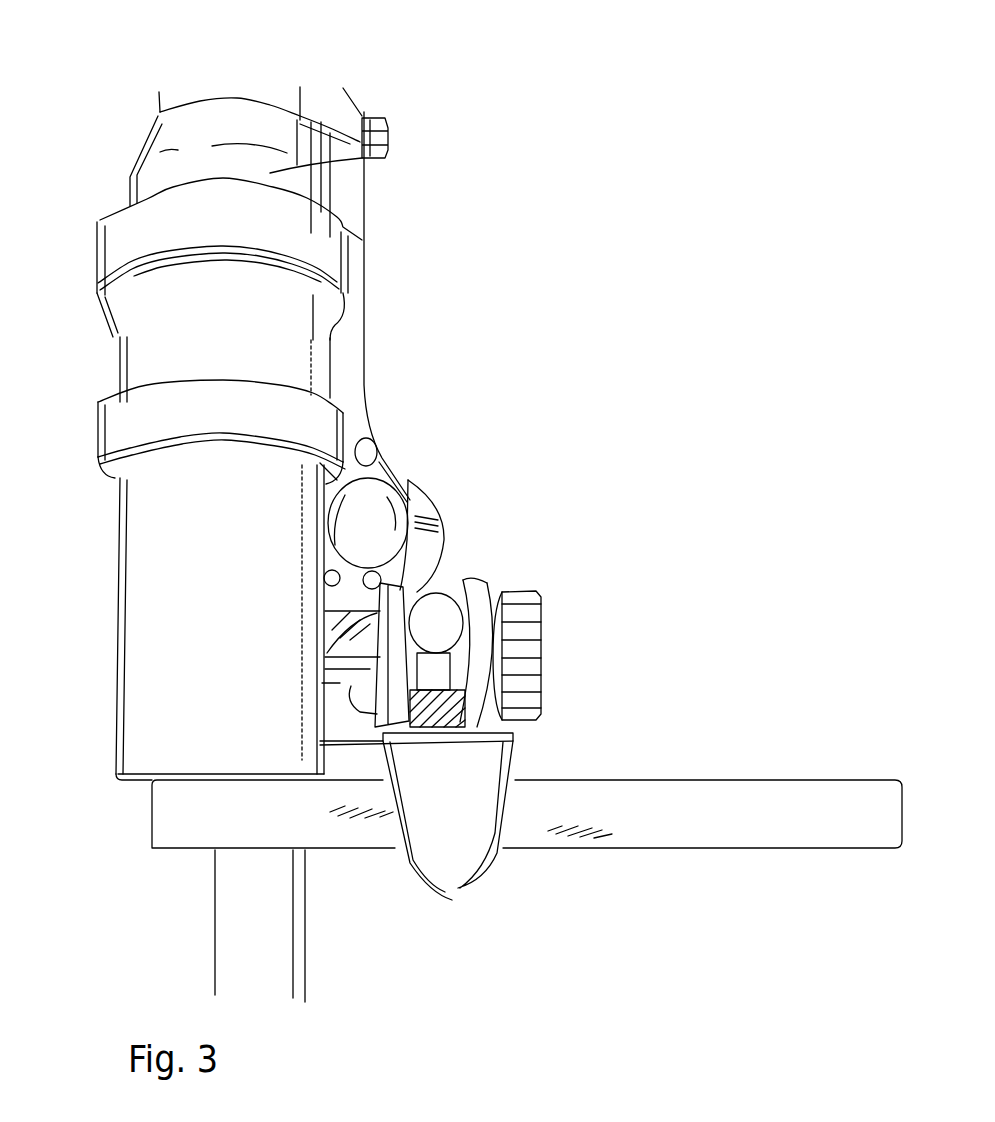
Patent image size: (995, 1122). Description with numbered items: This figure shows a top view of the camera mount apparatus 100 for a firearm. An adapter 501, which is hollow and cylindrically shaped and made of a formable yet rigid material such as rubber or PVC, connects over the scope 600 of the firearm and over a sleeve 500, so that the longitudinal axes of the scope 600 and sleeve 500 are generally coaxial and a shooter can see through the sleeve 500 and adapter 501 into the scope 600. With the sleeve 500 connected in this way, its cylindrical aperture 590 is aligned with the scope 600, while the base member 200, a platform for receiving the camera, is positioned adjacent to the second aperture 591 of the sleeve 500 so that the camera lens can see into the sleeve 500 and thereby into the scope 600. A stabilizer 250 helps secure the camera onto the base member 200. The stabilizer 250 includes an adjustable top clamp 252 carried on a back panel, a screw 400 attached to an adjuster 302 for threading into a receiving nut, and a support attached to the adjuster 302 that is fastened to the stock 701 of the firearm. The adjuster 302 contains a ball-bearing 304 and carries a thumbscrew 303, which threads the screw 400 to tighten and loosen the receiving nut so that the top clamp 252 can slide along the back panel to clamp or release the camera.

The camera mount apparatus 100 is at (96, 824).
The base member 200 is at (740, 765).
The stabilizer 250 is at (553, 658).
The adjustable top clamp 252 is at (442, 877).
The adjuster 302 is at (478, 584).
The thumbscrew 303 is at (537, 603).
The ball-bearing 304 is at (430, 593).
The screw 400 is at (468, 712).
The sleeve 500 is at (140, 597).
The adapter 501 is at (132, 372).
The cylindrical aperture 590 is at (96, 487).
The second aperture 591 is at (96, 767).
The scope 600 is at (272, 188).
The stock 701 is at (235, 915).